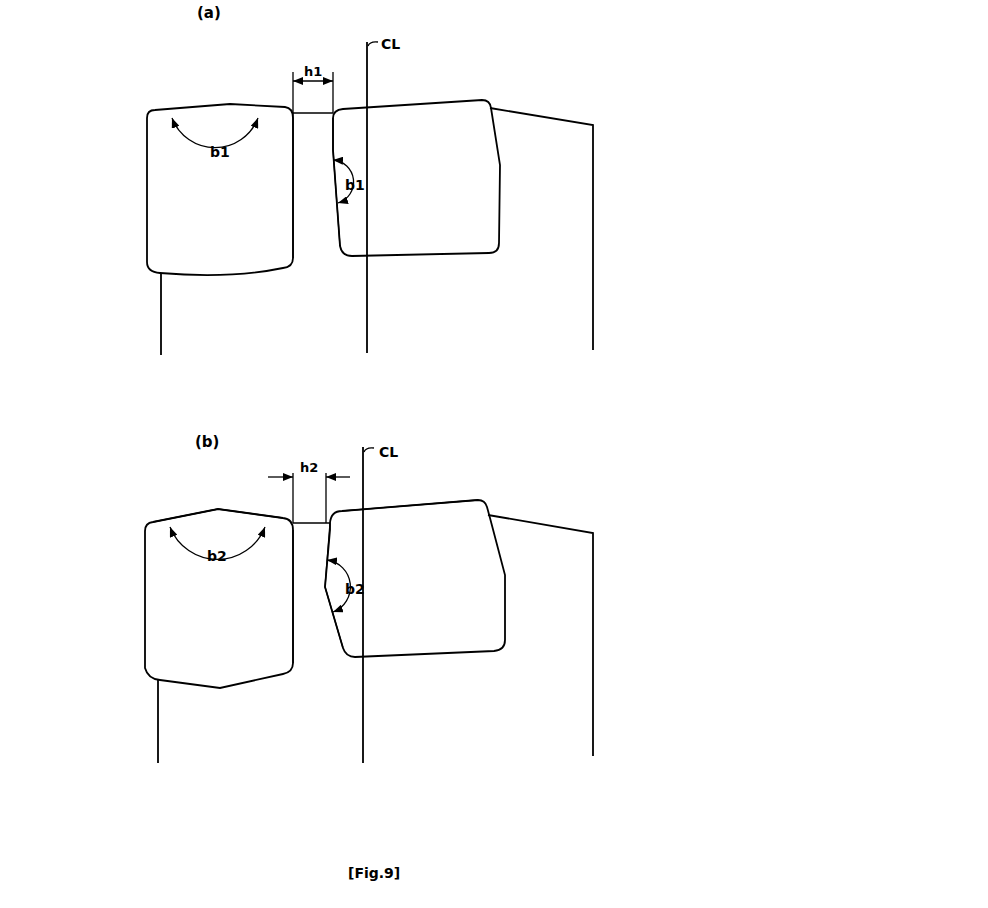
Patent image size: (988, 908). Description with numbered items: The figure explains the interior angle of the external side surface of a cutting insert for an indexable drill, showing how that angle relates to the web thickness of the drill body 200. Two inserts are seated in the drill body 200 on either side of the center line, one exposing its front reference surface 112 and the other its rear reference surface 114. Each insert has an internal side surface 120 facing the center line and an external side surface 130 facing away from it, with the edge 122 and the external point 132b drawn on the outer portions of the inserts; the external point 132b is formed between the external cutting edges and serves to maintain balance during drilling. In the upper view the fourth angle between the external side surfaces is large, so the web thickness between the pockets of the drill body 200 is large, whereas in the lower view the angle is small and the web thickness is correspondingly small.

The front reference surface 112 is at (176, 224).
The rear reference surface 114 is at (380, 246).
The internal side surface 120 is at (292, 203).
The external side surface 130 is at (338, 227).
The drill body 200 is at (598, 206).
The top land of second tooth 122 is at (476, 502).
The external point 132b is at (218, 506).